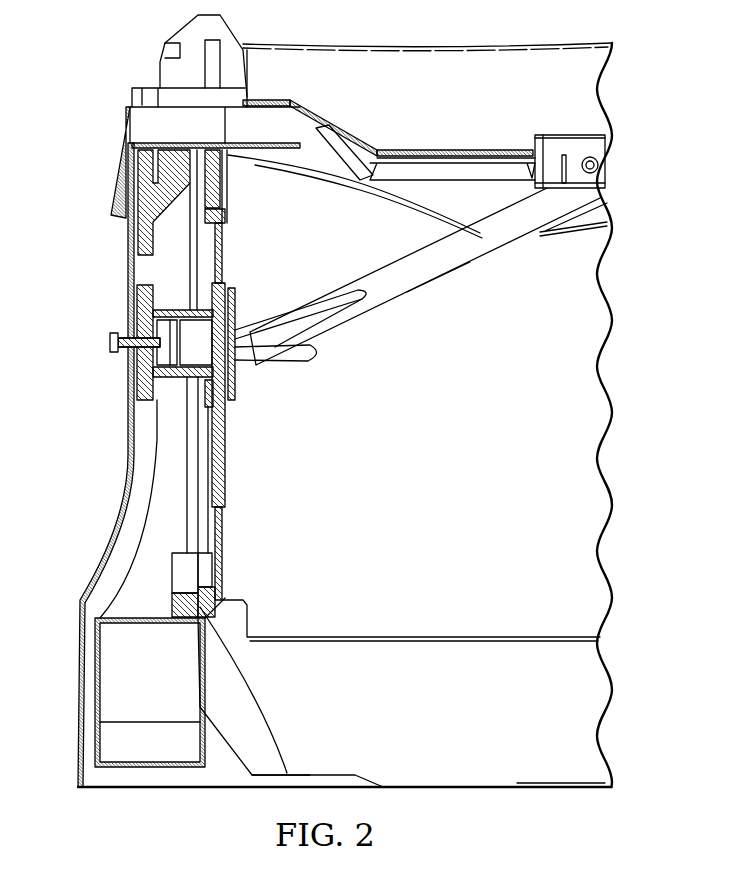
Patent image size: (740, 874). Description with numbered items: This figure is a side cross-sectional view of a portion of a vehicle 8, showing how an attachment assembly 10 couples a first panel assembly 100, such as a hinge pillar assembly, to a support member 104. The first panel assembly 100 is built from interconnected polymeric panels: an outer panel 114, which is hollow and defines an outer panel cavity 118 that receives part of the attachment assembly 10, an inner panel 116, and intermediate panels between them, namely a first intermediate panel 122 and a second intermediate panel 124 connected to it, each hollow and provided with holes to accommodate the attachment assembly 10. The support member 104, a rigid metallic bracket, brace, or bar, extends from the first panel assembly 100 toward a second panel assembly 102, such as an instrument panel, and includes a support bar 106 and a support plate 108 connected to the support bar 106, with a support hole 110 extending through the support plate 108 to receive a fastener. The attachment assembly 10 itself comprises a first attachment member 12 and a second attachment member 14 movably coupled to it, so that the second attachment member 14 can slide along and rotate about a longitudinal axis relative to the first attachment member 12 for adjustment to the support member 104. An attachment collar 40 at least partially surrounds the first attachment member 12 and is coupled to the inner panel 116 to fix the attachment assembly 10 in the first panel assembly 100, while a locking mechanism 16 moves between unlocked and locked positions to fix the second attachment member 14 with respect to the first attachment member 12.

The vehicle 8 is at (428, 46).
The second panel assembly 102 is at (555, 98).
The support plate 108 is at (551, 165).
The first panel assembly 100 is at (134, 243).
The first intermediate panel 122 is at (150, 272).
The first attachment member 12 is at (136, 312).
The locking mechanism 16 is at (108, 343).
The outer panel 114 is at (134, 458).
The outer panel cavity 118 is at (132, 497).
The attachment assembly 10 is at (205, 300).
The second intermediate panel 124 is at (204, 248).
The second attachment member 14 is at (218, 292).
The support hole 110 is at (237, 303).
The support member 104 is at (482, 263).
The support bar 106 is at (407, 292).
The attachment collar 40 is at (199, 378).
The inner panel 116 is at (226, 573).